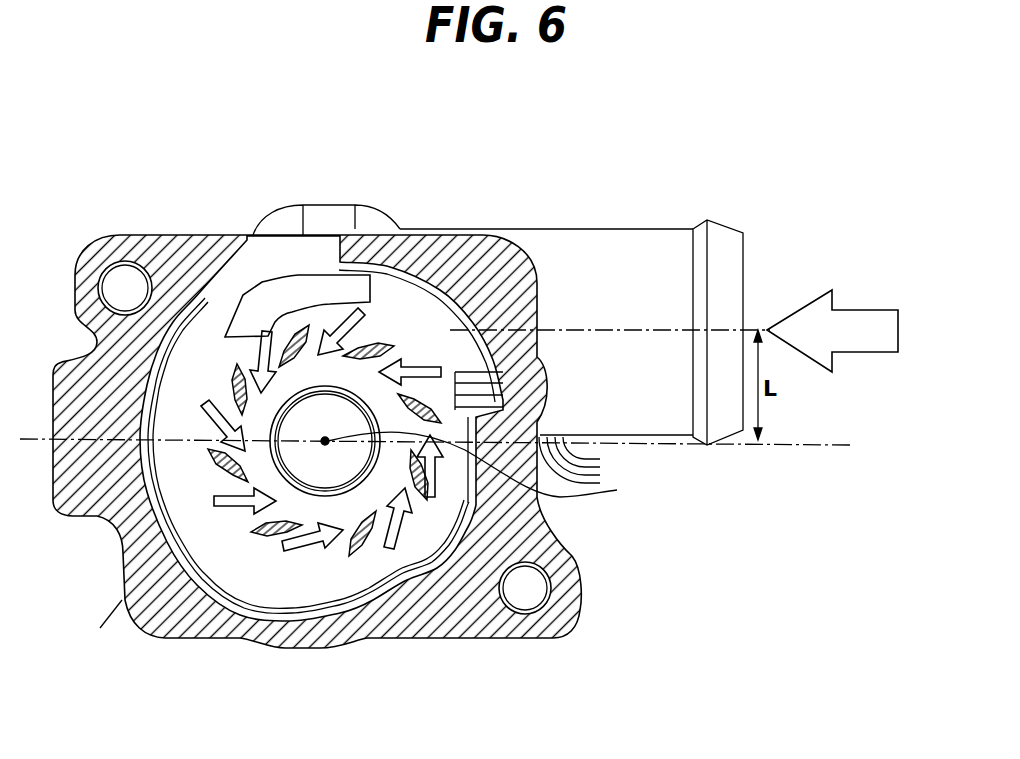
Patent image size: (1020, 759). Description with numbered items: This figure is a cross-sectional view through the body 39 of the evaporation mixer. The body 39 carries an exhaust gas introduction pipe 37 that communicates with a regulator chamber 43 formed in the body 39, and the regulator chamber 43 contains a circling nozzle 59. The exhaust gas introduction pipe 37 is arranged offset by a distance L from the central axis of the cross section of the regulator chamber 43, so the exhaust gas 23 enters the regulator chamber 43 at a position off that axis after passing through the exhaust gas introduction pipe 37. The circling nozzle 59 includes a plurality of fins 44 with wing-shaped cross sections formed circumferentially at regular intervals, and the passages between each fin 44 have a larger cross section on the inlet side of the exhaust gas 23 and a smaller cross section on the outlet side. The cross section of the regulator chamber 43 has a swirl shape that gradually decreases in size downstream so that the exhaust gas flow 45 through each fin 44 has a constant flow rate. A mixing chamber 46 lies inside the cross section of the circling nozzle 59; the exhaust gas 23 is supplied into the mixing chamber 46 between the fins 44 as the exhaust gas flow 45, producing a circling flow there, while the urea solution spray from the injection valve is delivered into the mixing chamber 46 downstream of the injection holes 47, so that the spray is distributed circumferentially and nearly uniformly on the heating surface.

The exhaust gas 23 is at (327, 292).
The exhaust gas introduction pipe 37 is at (565, 258).
The body 39 is at (172, 234).
The regulator chamber 43 is at (96, 625).
The fin 44 is at (290, 517).
The exhaust gas flow 45 is at (303, 533).
The mixing chamber 46 is at (375, 548).
The injection holes 47 is at (485, 467).
The circling nozzle 59 is at (480, 640).